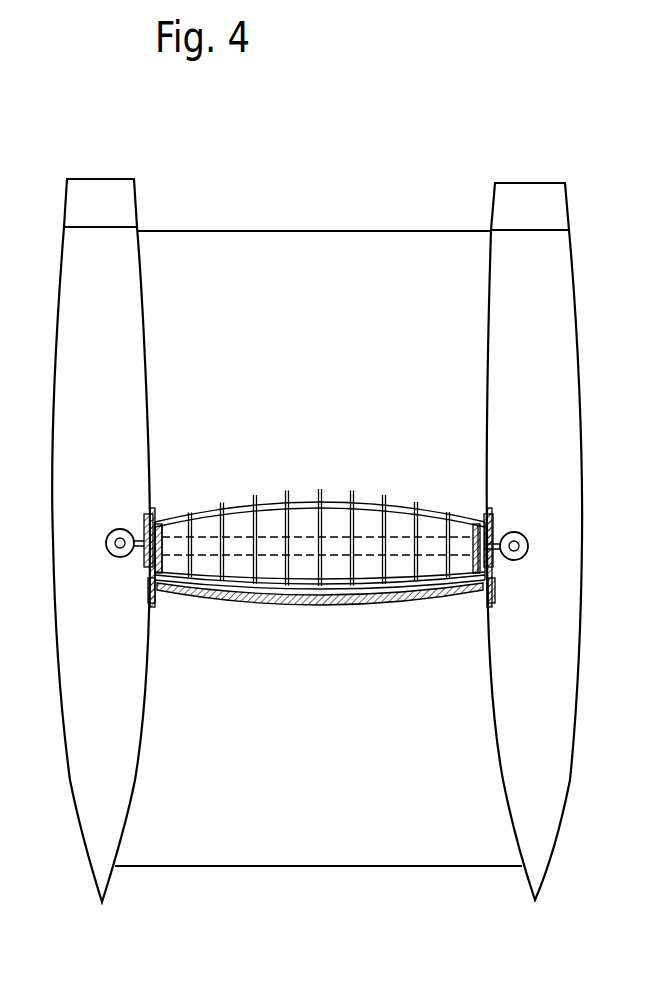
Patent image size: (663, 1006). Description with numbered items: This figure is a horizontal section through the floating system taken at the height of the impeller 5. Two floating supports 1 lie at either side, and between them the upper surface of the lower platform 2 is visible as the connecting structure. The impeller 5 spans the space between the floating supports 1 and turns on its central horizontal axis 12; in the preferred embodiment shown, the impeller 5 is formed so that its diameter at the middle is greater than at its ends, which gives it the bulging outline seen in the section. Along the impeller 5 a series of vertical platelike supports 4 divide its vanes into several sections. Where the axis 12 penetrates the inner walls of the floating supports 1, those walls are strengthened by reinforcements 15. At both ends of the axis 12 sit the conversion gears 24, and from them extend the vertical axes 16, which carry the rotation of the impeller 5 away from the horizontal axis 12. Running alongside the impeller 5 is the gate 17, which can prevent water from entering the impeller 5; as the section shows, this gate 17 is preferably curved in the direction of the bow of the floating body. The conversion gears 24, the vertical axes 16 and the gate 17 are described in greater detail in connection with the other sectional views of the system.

The floating supports 1 is at (127, 300).
The lower platform 2 is at (367, 810).
The vertical platelike supports 4 is at (247, 527).
The impeller 5 is at (332, 527).
The central horizontal axis 12 is at (148, 557).
The reinforcements 15 is at (147, 528).
The vertical axes 16 is at (514, 551).
The gate 17 is at (316, 606).
The conversion gears 24 is at (528, 536).